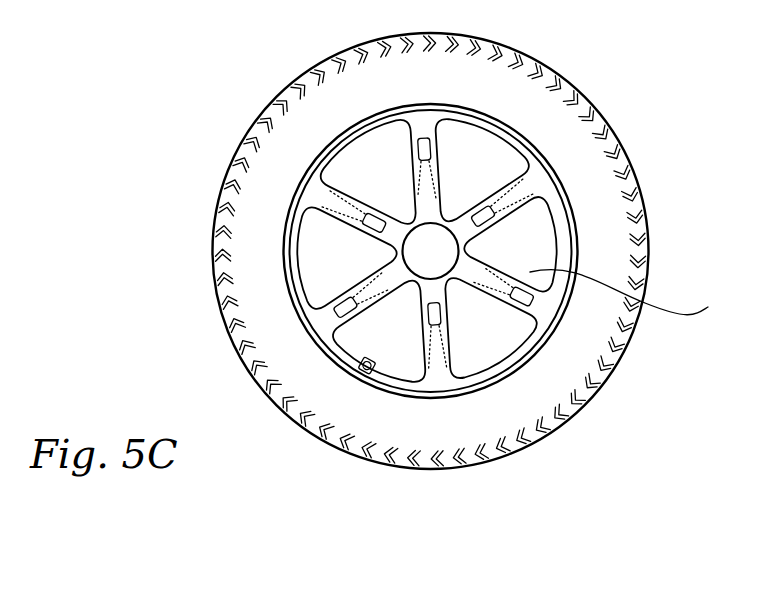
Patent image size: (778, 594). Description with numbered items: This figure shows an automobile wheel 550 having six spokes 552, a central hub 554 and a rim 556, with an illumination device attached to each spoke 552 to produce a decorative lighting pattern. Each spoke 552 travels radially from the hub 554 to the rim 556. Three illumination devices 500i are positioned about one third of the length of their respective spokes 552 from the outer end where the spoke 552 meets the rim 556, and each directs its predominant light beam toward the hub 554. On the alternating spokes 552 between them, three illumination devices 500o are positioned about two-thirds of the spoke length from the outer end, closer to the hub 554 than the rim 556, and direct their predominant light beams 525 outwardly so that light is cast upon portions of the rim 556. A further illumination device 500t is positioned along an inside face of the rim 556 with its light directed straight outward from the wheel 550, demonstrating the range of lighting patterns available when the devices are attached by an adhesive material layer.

The wheel 550 is at (365, 157).
The predominant light beam 525 is at (563, 99).
The wheel rim 556 is at (290, 256).
The wheel hub 554 is at (430, 248).
The spoke 552 is at (323, 320).
The illumination device 500i is at (428, 176).
The illumination device 500o is at (387, 220).
The illumination device 500t is at (369, 384).